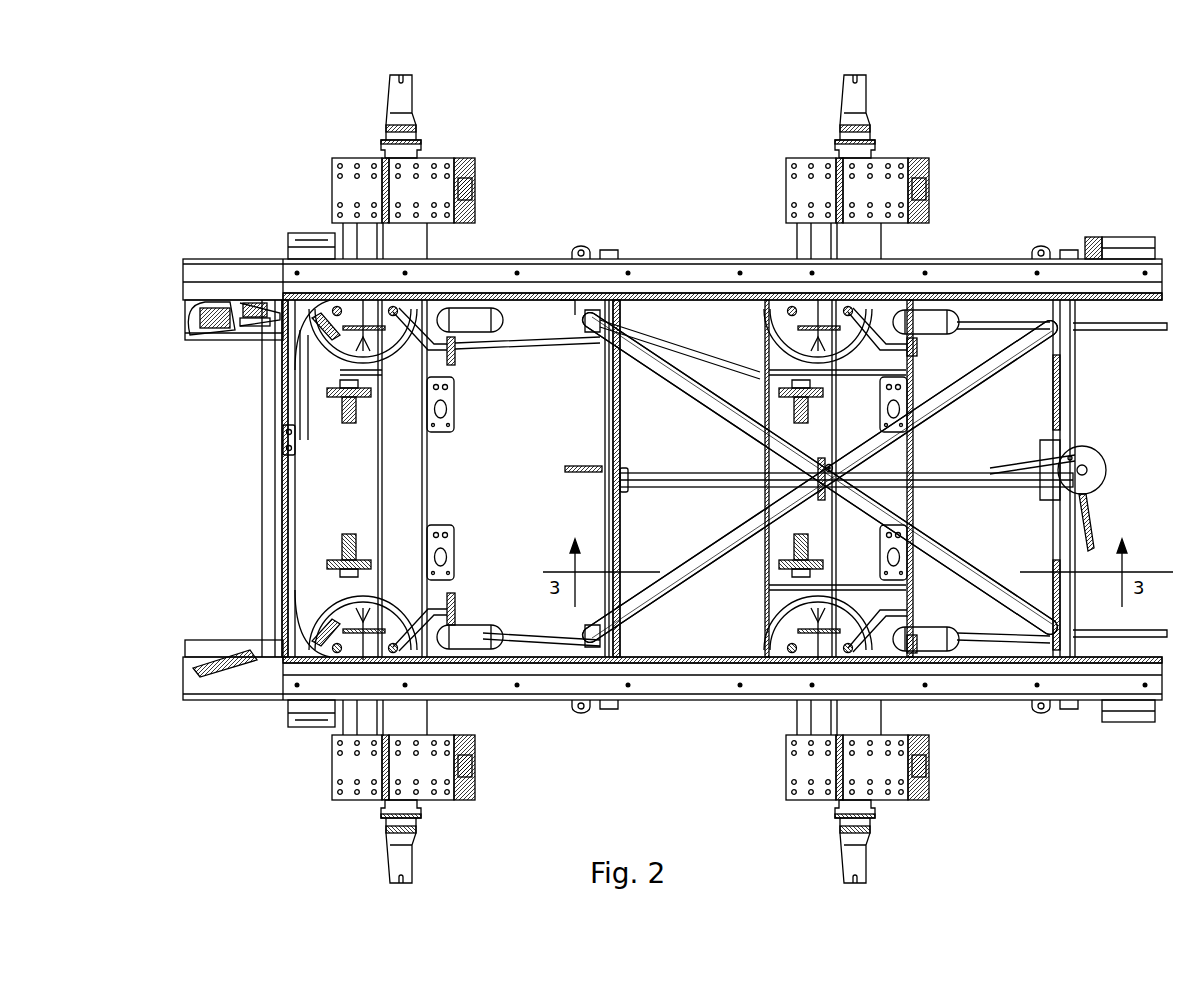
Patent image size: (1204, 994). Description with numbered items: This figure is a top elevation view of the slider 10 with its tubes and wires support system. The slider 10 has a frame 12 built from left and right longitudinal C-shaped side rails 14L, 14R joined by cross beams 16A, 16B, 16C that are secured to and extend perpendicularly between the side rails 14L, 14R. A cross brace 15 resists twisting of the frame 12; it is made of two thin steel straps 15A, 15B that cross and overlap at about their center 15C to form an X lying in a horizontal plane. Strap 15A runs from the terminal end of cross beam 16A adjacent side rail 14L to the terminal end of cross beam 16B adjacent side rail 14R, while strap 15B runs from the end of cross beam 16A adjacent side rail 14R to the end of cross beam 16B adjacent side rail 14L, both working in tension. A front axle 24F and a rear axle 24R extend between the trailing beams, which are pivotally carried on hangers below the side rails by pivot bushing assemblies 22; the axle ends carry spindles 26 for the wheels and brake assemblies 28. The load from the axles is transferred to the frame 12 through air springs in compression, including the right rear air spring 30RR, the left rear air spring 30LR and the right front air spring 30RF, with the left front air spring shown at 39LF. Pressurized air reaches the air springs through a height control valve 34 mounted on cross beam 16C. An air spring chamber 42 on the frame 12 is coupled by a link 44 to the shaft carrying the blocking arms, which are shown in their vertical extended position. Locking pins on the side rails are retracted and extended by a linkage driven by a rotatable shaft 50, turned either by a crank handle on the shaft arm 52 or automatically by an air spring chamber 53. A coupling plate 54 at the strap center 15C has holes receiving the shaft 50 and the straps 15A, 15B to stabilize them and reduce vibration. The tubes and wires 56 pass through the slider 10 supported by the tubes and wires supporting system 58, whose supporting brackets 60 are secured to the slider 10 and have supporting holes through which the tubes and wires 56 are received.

The slider 10 is at (1062, 158).
The frame 12 is at (325, 690).
The right side longitudinal C-shaped rail 14R is at (988, 275).
The left side longitudinal C-shaped rail 14L is at (993, 685).
The cross brace 15 is at (716, 568).
The strap 15A is at (680, 378).
The strap 15B is at (692, 568).
The center 15C is at (826, 480).
The cross beam 16A is at (1067, 380).
The cross beam 16B is at (610, 375).
The cross beam 16C is at (290, 578).
The pivot bushing assembly 22 is at (580, 252).
The rear axle 24R is at (407, 467).
The front axle 24F is at (845, 710).
The spindle 26 is at (405, 115).
The brake assembly 28 is at (363, 185).
The right rear air spring 30RR is at (323, 340).
The left rear air spring 30LR is at (318, 635).
The right front air spring 30RF is at (870, 320).
The left front wheel 39LF is at (767, 648).
The height control valve 34 is at (290, 450).
The air spring chamber 42 is at (217, 310).
The link 44 is at (265, 305).
The rotatable shaft 50 is at (995, 470).
The shaft arm 52 is at (1090, 515).
The air spring chamber 53 is at (1080, 457).
The coupling plate 54 is at (828, 470).
The tubes and wires 56 is at (722, 358).
The tubes and wires supporting system 58 is at (920, 345).
The tubes and wires supporting bracket 60 is at (765, 462).